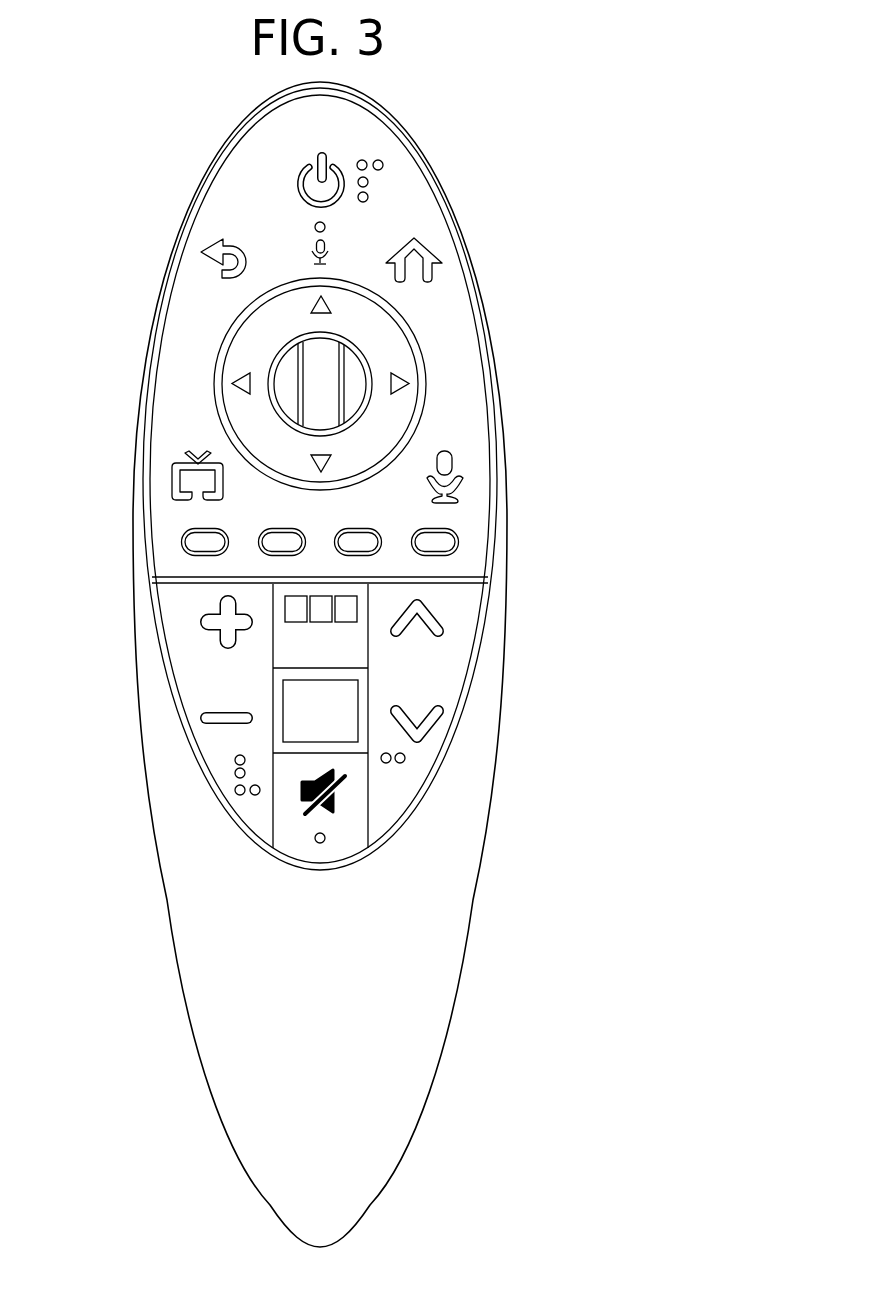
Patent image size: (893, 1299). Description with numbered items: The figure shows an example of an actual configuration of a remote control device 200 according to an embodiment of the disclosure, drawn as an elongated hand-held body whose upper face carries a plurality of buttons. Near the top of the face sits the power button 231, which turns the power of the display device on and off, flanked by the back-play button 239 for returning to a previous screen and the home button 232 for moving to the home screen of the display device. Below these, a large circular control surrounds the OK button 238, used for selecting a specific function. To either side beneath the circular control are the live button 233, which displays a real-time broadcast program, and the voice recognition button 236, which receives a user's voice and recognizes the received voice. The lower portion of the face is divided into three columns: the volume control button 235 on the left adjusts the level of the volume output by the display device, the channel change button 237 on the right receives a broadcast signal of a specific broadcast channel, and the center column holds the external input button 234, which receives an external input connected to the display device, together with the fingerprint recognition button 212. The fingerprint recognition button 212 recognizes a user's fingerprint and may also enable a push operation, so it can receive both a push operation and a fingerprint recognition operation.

The remote control device 200 is at (74, 128).
The fingerprint recognition button 212 is at (335, 742).
The power button 231 is at (337, 168).
The home button 232 is at (432, 249).
The live button 233 is at (173, 485).
The external input button 234 is at (327, 595).
The volume control button 235 is at (172, 688).
The voice recognition button 236 is at (458, 470).
The channel change button 237 is at (455, 658).
The OK button 238 is at (282, 367).
The back-play button 239 is at (216, 254).